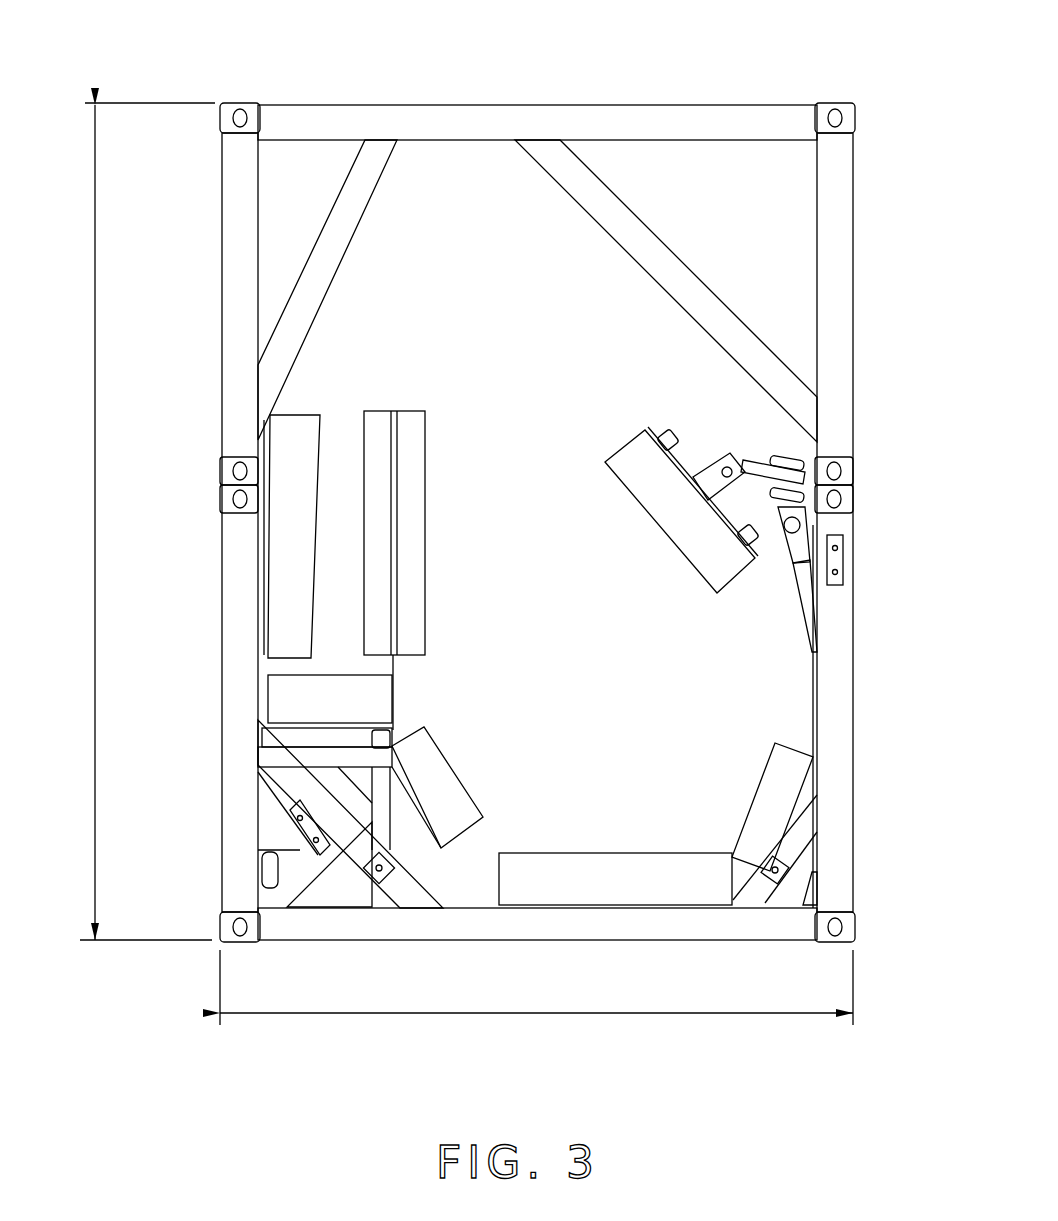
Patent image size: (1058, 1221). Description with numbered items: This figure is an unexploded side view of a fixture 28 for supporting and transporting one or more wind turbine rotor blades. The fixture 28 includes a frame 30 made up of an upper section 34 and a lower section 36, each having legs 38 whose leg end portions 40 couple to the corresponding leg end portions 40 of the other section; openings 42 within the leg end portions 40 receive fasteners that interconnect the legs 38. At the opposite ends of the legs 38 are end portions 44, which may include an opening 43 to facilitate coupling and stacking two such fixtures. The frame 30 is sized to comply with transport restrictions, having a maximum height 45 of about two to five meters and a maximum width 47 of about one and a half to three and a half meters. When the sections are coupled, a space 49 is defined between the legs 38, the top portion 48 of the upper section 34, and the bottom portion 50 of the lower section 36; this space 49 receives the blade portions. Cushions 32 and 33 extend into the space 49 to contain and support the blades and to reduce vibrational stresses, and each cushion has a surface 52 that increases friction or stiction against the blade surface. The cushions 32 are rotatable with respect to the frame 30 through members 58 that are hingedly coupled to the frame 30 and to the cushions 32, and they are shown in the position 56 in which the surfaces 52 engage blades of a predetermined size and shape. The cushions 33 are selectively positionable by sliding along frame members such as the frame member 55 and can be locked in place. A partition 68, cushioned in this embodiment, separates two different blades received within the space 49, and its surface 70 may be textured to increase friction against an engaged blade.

The fixture 28 is at (178, 133).
The frame 30 is at (214, 356).
The cushion 32 is at (296, 425).
The cushion 33 is at (432, 752).
The upper section 34 is at (856, 215).
The lower section 36 is at (215, 757).
The leg 38 is at (235, 213).
The leg end portion 40 is at (218, 470).
The opening 42 is at (245, 460).
The opening 43 is at (243, 112).
The end portion 44 is at (238, 90).
The maximum height 45 is at (100, 478).
The maximum width 47 is at (542, 1014).
The top portion 48 is at (553, 102).
The space 49 is at (467, 180).
The bottom portion 50 is at (372, 928).
The surface 52 is at (322, 450).
The frame member 55 is at (295, 735).
The position 56 is at (600, 278).
The member 58 is at (760, 466).
The partition 68 is at (425, 525).
The surface 70 is at (425, 457).